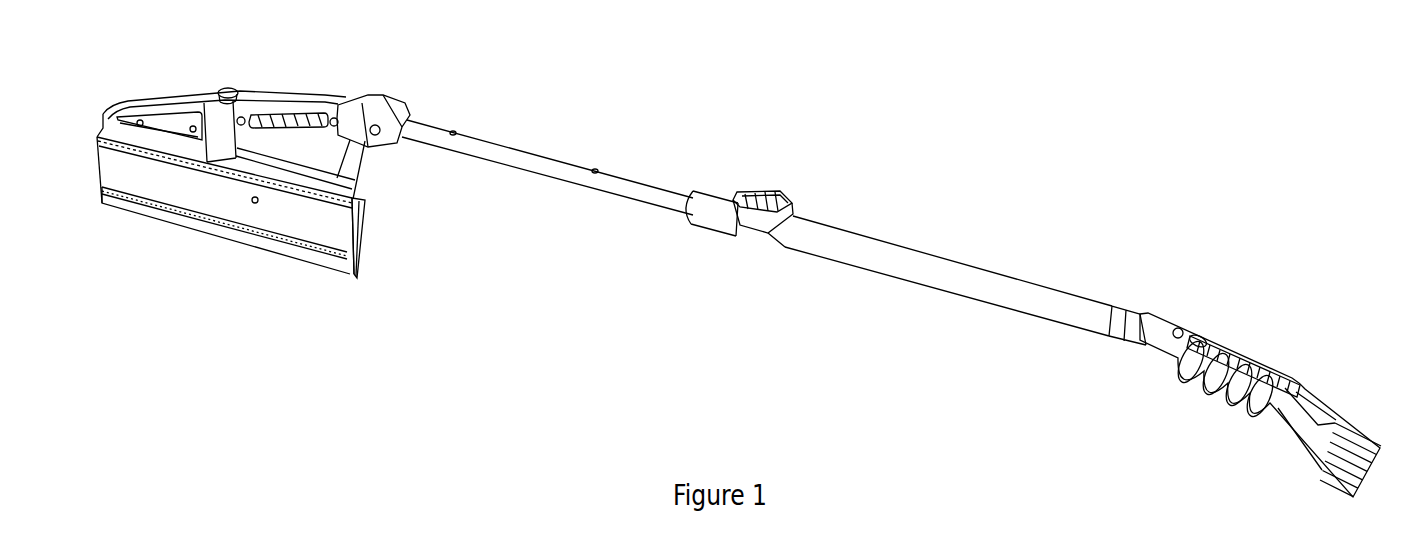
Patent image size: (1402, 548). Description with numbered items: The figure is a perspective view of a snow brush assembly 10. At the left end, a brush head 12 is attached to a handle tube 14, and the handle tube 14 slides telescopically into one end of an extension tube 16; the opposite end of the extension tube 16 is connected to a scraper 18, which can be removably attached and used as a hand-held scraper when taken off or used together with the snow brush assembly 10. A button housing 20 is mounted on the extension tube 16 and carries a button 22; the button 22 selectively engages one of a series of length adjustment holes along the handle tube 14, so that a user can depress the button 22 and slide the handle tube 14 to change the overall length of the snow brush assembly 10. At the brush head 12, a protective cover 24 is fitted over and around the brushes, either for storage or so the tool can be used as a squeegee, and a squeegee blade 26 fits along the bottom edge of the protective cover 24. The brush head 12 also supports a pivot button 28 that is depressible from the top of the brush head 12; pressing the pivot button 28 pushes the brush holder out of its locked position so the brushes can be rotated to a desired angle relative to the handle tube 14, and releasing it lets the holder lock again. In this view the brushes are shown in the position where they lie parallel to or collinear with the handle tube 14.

The snow brush assembly 10 is at (870, 178).
The brush head 12 is at (163, 93).
The handle tube 14 is at (437, 128).
The extension tube 16 is at (968, 263).
The scraper 18 is at (1157, 322).
The button housing 20 is at (713, 202).
The button 22 is at (777, 192).
The protective cover 24 is at (333, 228).
The squeegee blade 26 is at (297, 260).
The pivot button 28 is at (235, 90).